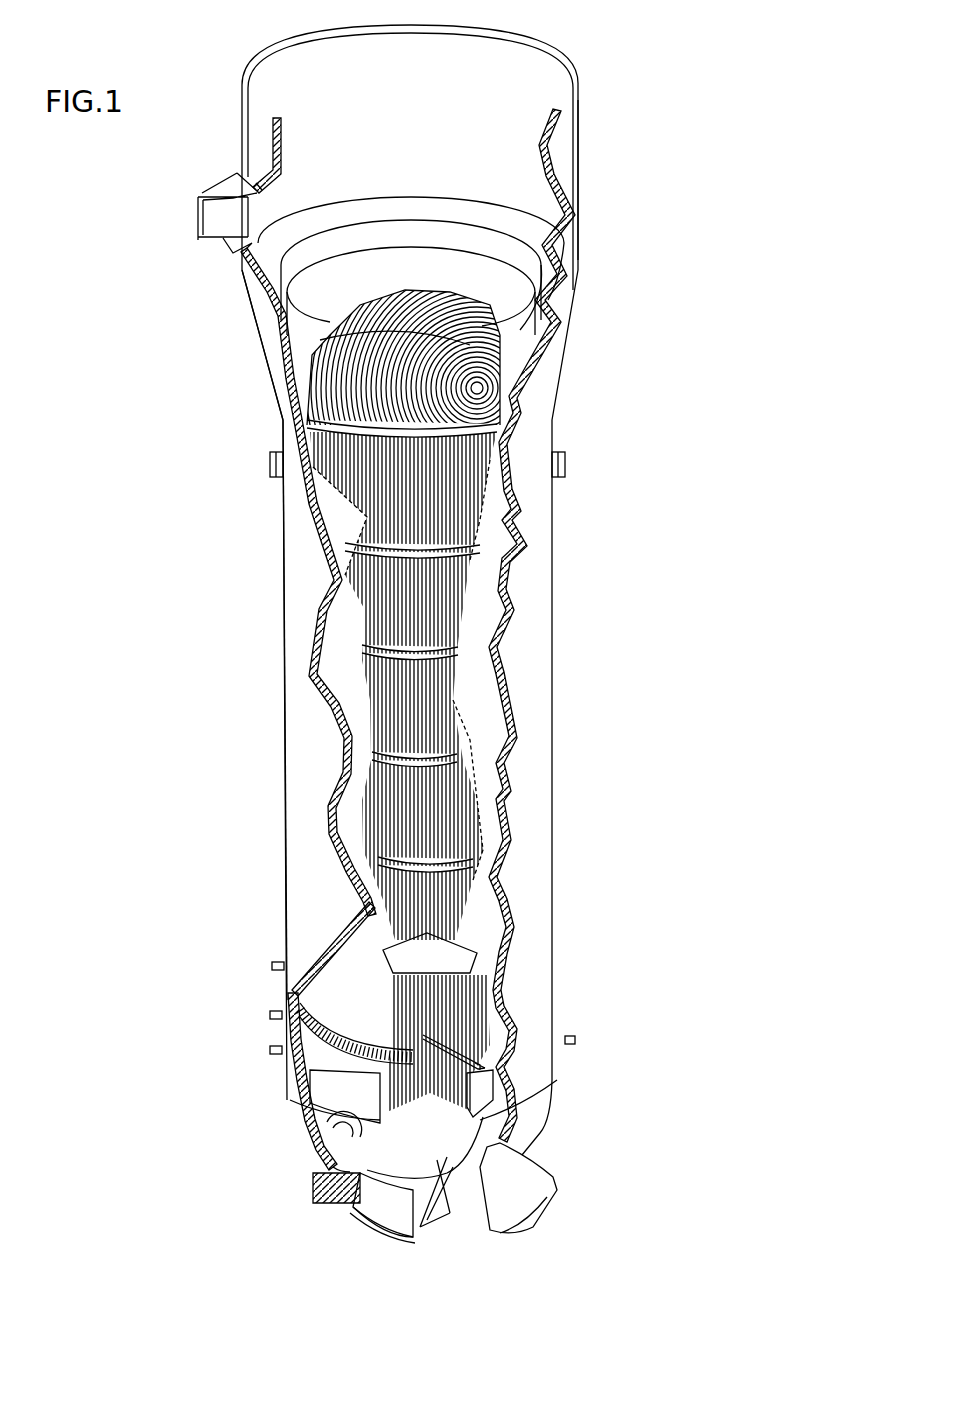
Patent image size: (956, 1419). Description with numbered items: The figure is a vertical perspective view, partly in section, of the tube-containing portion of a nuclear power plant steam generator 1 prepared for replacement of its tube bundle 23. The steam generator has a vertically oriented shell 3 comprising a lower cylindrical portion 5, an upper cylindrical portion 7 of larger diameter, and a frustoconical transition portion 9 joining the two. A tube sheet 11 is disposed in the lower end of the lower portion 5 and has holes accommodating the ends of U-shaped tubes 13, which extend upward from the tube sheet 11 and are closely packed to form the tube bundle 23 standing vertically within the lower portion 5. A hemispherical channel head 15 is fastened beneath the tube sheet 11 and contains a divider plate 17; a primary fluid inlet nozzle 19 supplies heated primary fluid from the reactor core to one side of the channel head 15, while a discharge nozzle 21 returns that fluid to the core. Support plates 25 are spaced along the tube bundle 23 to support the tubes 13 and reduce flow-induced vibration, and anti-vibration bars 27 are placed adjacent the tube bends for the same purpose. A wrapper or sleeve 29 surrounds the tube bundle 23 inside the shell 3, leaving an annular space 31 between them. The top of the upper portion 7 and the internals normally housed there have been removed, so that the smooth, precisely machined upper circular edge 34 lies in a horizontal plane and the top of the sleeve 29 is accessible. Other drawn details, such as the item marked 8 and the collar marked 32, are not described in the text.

The steam generator 1 is at (557, 903).
The shell 3 is at (575, 117).
The lower cylindrical portion 5 is at (286, 674).
The upper cylindrical portion 7 is at (570, 158).
The drain rod 8 is at (517, 1040).
The frustoconical transition portion 9 is at (262, 350).
The tube sheet 11 is at (325, 1082).
The U-shaped tubes 13 is at (450, 723).
The hemispherical channel head 15 is at (540, 1133).
The divider plate 17 is at (437, 1162).
The primary fluid inlet nozzle 19 is at (365, 1217).
The discharge nozzle 21 is at (543, 1197).
The tube bundle 23 is at (457, 670).
The support plates 25 is at (470, 865).
The anti-vibration bars 27 is at (373, 357).
The wrapper or sleeve 29 is at (370, 927).
The annular space 31 is at (300, 993).
The collar ring 32 is at (525, 296).
The upper circular edge 34 is at (470, 38).